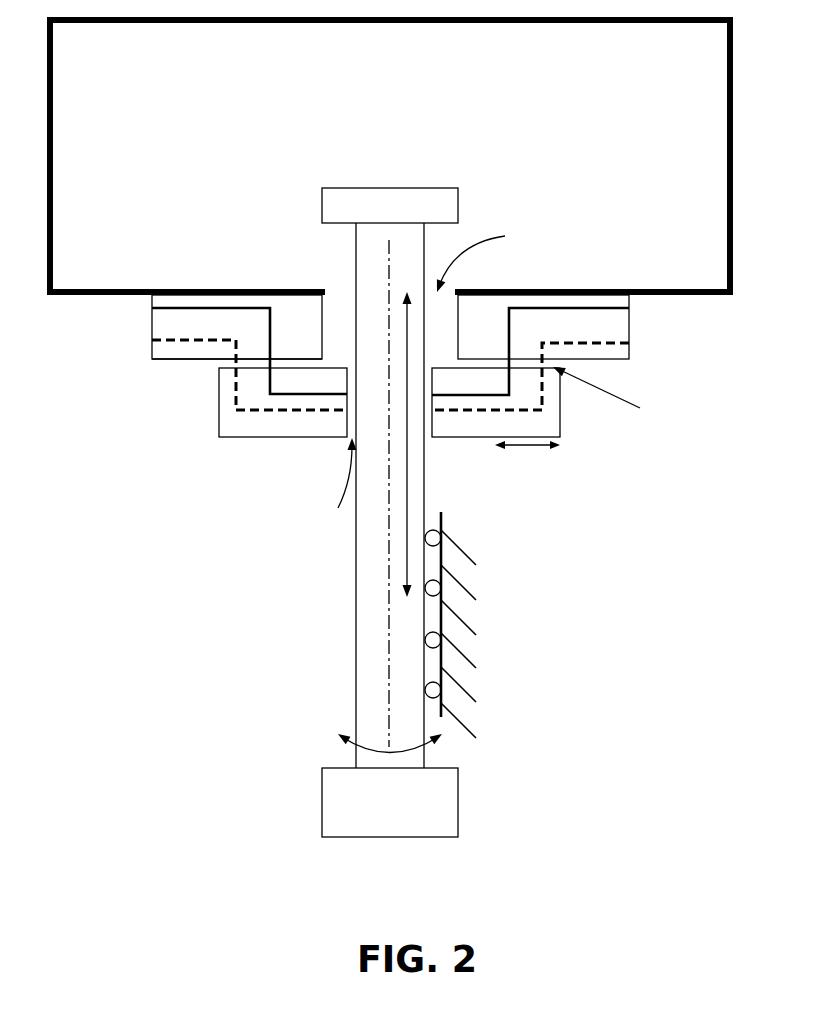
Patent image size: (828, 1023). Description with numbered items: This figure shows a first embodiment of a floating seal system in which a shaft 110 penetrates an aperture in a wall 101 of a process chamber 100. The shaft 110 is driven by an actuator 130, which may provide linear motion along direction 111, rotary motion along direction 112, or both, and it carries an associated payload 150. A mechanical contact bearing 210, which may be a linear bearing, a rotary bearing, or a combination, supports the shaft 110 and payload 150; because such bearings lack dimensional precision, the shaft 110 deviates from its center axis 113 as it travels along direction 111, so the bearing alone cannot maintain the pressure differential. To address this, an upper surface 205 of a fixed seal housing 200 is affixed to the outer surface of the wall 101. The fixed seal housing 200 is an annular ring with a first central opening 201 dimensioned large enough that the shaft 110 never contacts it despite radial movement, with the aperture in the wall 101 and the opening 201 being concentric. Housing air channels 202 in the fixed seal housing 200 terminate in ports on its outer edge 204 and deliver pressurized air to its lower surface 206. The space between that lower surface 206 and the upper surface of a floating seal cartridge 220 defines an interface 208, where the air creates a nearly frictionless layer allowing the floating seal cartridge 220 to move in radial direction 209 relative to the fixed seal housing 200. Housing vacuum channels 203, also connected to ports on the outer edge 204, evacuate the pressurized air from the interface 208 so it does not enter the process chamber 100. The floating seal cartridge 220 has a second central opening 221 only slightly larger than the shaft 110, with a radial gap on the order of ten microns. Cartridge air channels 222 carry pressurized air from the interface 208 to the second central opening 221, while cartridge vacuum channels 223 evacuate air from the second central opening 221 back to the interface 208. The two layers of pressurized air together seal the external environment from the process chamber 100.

The process chamber 100 is at (117, 63).
The wall 101 is at (190, 290).
The shaft 110 is at (356, 677).
The direction 111 is at (407, 466).
The direction 112 is at (409, 749).
The center axis 113 is at (389, 275).
The actuator 130 is at (407, 812).
The payload 150 is at (407, 216).
The fixed seal housing 200 is at (620, 360).
The first central opening 201 is at (492, 259).
The housing air channels 202 is at (629, 343).
The housing vacuum channels 203 is at (629, 310).
The outer edge 204 is at (152, 322).
The upper surface 205 is at (595, 290).
The lower surface 206 is at (162, 360).
The interface 208 is at (556, 366).
The radial direction 209 is at (527, 461).
The mechanical contact bearing 210 is at (450, 718).
The floating seal cartridge 220 is at (219, 436).
The second central opening 221 is at (333, 489).
The cartridge air channels 222 is at (236, 395).
The cartridge vacuum channels 223 is at (268, 378).